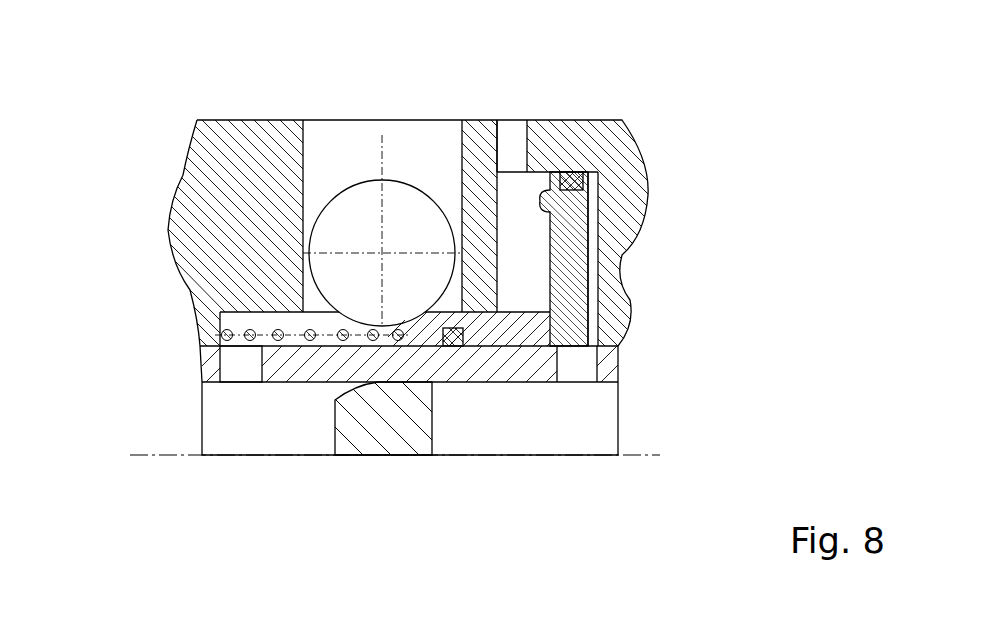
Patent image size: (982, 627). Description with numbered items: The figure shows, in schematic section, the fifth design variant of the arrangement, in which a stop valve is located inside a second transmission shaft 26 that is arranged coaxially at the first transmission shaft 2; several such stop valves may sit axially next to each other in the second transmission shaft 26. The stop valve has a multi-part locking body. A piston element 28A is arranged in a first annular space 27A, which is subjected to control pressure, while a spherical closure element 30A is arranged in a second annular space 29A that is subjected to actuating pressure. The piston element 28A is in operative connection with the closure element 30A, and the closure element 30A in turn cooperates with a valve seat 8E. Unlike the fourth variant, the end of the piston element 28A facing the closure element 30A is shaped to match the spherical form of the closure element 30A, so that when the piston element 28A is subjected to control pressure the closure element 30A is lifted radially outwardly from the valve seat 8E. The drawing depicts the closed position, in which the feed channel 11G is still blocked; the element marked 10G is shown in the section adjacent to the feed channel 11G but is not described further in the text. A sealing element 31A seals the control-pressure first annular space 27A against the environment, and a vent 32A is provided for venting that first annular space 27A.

The first transmission shaft 2 is at (463, 365).
The valve seat 8E is at (290, 287).
The bearing plate 10G is at (298, 365).
The feed channel 11G is at (235, 367).
The second transmission shaft 26 is at (225, 203).
The first annular space 27A is at (600, 316).
The piston element 28A is at (590, 256).
The second annular space 29A is at (345, 140).
The spherical closure element 30A is at (403, 218).
The sealing element 31A is at (590, 190).
The vent 32A is at (517, 125).